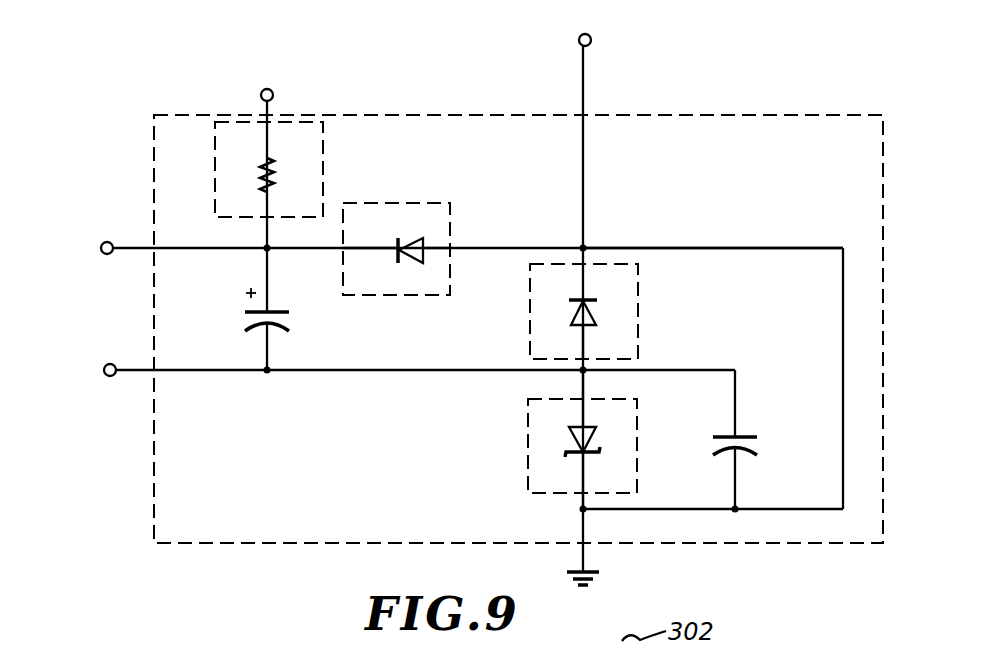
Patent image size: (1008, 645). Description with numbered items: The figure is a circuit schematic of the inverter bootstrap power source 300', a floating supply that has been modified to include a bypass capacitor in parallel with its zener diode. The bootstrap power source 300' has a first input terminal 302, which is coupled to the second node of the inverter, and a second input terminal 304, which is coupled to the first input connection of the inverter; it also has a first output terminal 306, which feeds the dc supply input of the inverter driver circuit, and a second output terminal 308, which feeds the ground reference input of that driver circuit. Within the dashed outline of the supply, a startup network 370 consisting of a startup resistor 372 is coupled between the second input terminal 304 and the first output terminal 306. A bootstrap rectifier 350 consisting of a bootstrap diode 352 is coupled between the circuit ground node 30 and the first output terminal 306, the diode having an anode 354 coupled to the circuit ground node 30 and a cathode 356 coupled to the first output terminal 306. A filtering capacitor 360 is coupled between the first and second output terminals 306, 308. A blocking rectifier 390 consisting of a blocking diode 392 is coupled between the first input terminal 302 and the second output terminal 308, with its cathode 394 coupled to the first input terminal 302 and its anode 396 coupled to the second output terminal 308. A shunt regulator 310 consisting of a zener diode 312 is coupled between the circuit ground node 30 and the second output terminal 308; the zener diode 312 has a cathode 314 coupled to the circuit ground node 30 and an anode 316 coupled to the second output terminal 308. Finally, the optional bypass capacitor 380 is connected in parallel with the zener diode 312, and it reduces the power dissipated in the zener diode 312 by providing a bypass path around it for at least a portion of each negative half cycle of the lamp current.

The bootstrap power source 300' is at (518, 313).
The first input terminal 302 is at (592, 37).
The second input terminal 304 is at (274, 93).
The first output terminal 306 is at (103, 242).
The second output terminal 308 is at (106, 364).
The startup network 370 is at (324, 138).
The startup resistor 372 is at (265, 154).
The bootstrap rectifier 350 is at (395, 203).
The bootstrap diode 352 is at (410, 238).
The anode 354 is at (440, 248).
The cathode 356 is at (375, 249).
The filtering capacitor 360 is at (289, 312).
The blocking rectifier 390 is at (617, 248).
The blocking diode 392 is at (596, 325).
The cathode 394 is at (584, 283).
The anode 396 is at (582, 338).
The shunt regulator 310 is at (606, 399).
The zener diode 312 is at (593, 428).
The cathode 314 is at (577, 485).
The anode 316 is at (577, 410).
The bypass capacitor 380 is at (752, 432).
The circuit ground node 30 is at (580, 545).